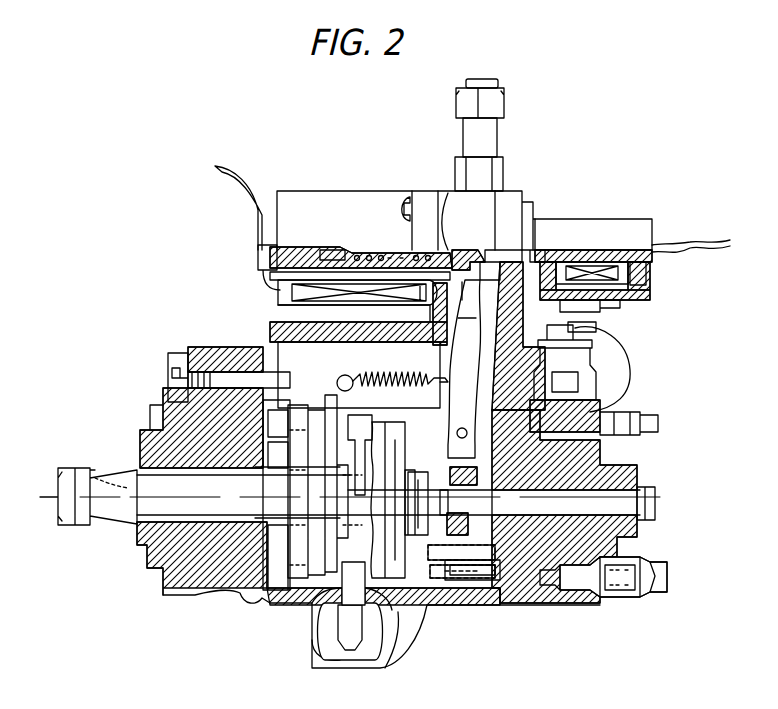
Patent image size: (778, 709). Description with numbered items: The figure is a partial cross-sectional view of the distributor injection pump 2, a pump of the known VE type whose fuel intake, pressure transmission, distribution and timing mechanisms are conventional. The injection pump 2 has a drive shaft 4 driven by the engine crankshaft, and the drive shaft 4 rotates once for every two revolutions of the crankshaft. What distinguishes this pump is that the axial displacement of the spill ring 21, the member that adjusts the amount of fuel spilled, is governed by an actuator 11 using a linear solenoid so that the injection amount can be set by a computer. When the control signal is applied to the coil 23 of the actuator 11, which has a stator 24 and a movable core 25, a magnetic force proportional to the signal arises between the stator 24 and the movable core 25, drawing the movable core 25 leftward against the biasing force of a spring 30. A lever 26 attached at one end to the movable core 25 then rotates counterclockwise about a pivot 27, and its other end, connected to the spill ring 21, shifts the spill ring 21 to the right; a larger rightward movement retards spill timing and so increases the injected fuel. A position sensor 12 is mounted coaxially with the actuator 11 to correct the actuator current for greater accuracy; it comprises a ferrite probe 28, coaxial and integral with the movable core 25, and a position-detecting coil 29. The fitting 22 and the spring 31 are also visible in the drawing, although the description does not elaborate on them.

The injection pump 2 is at (233, 610).
The drive shaft 4 is at (138, 518).
The actuator 11 is at (300, 197).
The position sensor 12 is at (571, 220).
The spill ring 21 is at (463, 543).
The fuel fitting 22 is at (552, 515).
The coil 23 is at (296, 294).
The stator 24 is at (332, 252).
The movable core 25 is at (457, 255).
The lever 26 is at (500, 257).
The pivot 27 is at (457, 433).
The probe 28 is at (590, 255).
The position-detecting coil 29 is at (614, 255).
The spring 30 is at (370, 254).
The return spring 31 is at (352, 376).